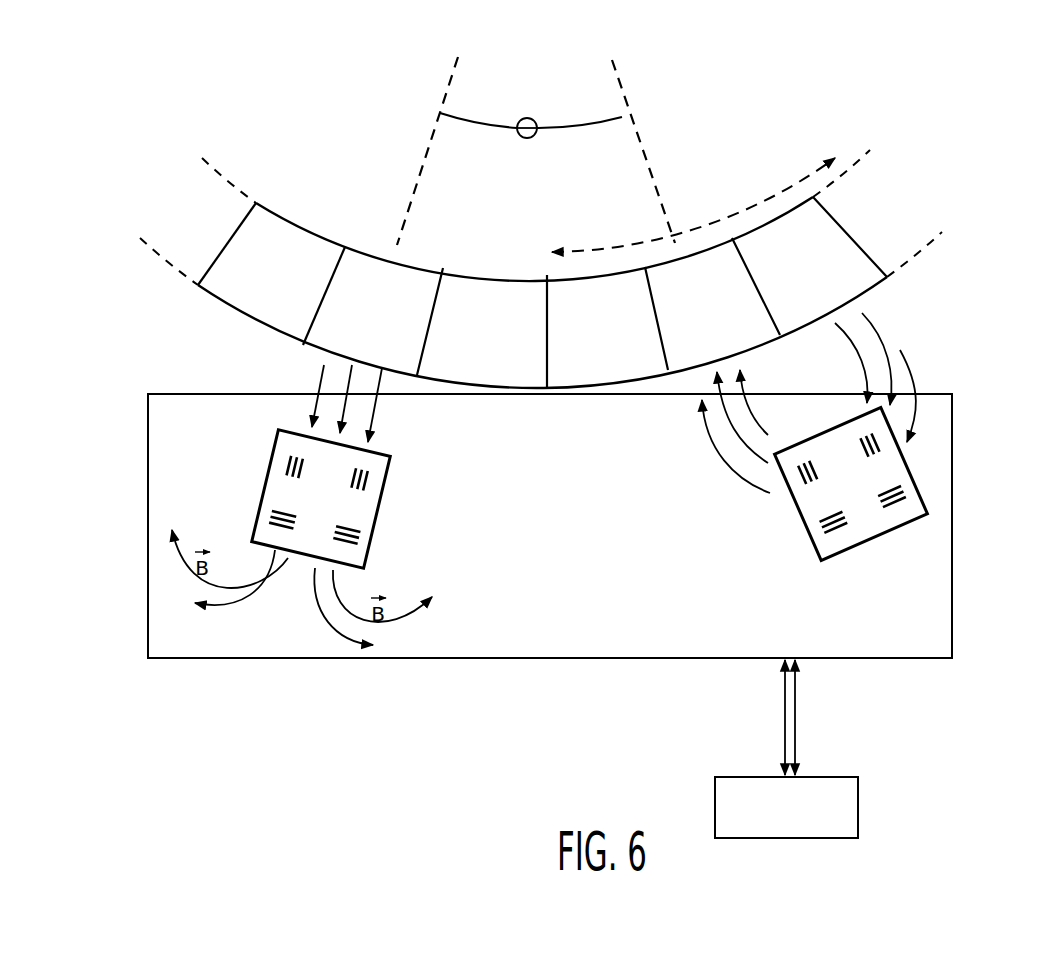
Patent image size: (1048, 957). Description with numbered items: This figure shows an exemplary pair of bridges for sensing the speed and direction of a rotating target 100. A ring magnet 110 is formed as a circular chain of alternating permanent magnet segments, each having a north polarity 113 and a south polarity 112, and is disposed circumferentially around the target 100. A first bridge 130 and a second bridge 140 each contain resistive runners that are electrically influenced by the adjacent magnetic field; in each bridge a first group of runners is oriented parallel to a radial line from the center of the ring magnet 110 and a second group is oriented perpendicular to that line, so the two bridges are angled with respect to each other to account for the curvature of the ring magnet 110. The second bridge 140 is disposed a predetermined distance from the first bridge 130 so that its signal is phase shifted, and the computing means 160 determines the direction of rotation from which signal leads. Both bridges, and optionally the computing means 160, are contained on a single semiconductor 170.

The rotating magnetic target 100 is at (813, 128).
The ring magnet 110 is at (549, 269).
The south polarity 112 is at (283, 217).
The north polarity 113 is at (357, 247).
The first bridge 130 is at (325, 497).
The second bridge 140 is at (798, 518).
The computing means 160 is at (862, 810).
The semiconductor 170 is at (957, 423).